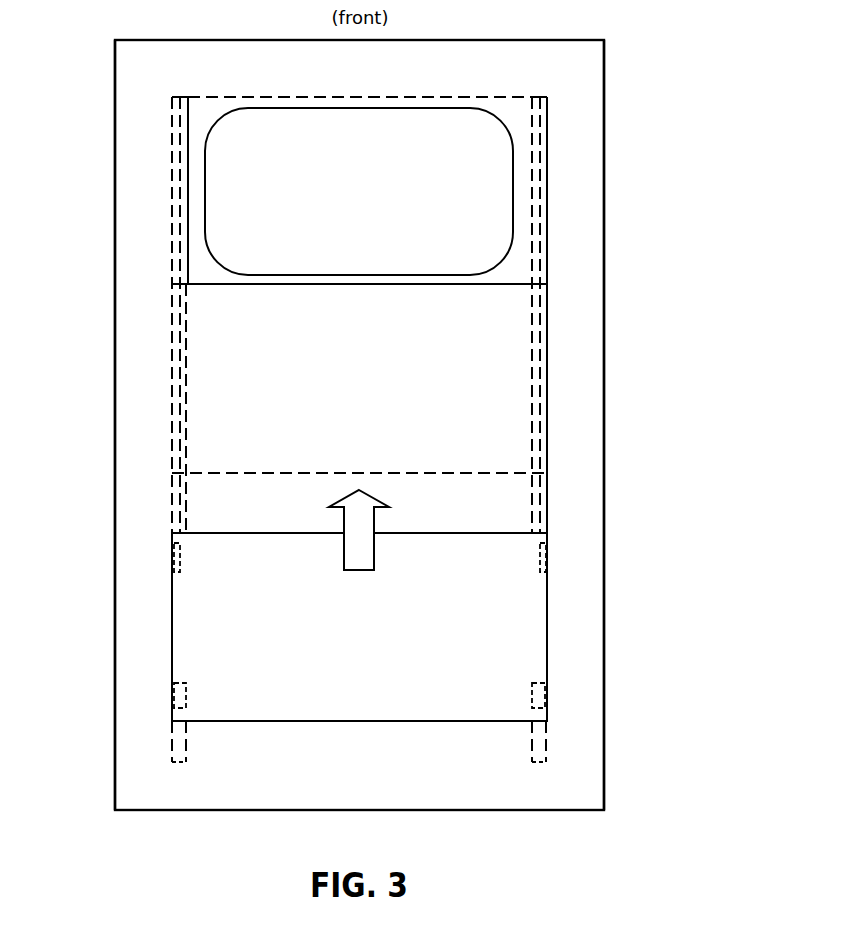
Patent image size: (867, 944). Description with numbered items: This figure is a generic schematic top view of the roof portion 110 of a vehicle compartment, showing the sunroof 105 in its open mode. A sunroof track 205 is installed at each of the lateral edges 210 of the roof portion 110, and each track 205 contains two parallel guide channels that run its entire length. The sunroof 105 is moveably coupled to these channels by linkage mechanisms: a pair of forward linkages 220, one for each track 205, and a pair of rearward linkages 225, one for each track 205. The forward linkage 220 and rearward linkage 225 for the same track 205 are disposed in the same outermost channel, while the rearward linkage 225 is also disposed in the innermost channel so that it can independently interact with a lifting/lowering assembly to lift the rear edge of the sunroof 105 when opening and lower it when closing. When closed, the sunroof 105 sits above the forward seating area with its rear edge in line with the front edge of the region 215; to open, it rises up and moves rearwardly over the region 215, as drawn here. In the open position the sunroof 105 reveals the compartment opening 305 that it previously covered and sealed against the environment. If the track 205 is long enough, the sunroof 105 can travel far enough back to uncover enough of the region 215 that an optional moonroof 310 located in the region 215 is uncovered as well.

The sunroof 105 is at (376, 638).
The roof portion 110 is at (133, 97).
The sunroof track 205 is at (186, 417).
The lateral edges 210 is at (121, 479).
The region 215 is at (578, 333).
The forward linkages 220 is at (180, 560).
The rearward linkages 225 is at (185, 703).
The compartment opening 305 is at (376, 204).
The moonroof 310 is at (376, 390).